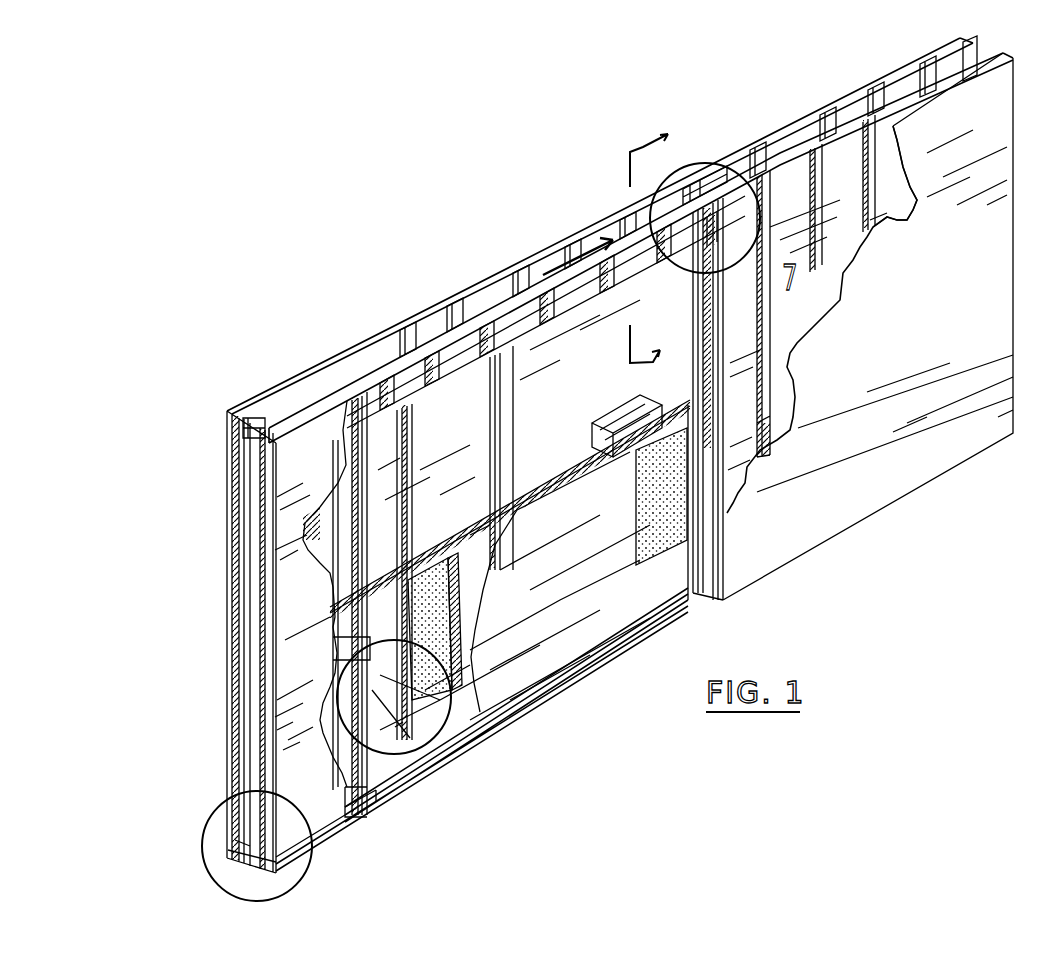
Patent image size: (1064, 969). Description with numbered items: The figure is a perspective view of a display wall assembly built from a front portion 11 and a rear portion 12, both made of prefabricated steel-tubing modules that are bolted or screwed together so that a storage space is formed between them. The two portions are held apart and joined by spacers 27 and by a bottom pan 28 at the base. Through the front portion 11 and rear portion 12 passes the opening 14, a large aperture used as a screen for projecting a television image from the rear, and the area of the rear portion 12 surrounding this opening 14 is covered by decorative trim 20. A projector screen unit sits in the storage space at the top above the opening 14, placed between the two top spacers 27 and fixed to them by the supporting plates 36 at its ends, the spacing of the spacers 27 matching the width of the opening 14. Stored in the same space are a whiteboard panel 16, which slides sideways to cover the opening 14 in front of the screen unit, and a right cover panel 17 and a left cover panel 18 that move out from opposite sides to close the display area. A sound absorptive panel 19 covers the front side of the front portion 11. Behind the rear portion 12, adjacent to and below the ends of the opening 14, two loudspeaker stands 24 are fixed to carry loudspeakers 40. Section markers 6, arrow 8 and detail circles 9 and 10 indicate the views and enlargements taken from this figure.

The section line 6- 6 is at (629, 264).
The direction arrow 8 is at (560, 263).
The detail circle 9 is at (443, 723).
The detail circle 10 is at (312, 858).
The front portion 11 is at (880, 225).
The rear portion 12 is at (873, 86).
The opening 14 is at (533, 358).
The whiteboard panel 16 is at (787, 367).
The right cover panel 17 is at (707, 527).
The left cover panel 18 is at (255, 519).
The sound absorptive panel 19 is at (987, 130).
The decorative trim 20 is at (483, 635).
The loudspeaker stand 24 is at (445, 735).
The spacer 27 is at (827, 130).
The bottom pan 28 is at (375, 798).
The supporting plate 36 is at (400, 335).
The loudspeaker 40 is at (345, 628).